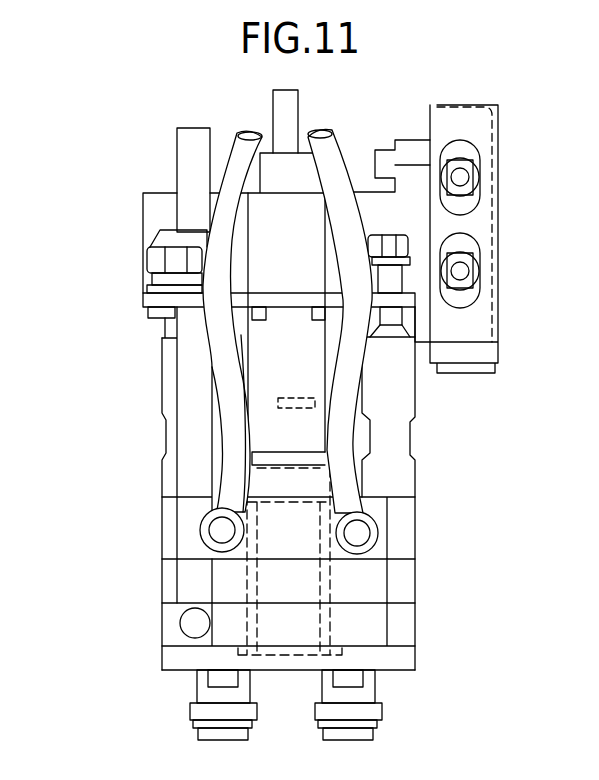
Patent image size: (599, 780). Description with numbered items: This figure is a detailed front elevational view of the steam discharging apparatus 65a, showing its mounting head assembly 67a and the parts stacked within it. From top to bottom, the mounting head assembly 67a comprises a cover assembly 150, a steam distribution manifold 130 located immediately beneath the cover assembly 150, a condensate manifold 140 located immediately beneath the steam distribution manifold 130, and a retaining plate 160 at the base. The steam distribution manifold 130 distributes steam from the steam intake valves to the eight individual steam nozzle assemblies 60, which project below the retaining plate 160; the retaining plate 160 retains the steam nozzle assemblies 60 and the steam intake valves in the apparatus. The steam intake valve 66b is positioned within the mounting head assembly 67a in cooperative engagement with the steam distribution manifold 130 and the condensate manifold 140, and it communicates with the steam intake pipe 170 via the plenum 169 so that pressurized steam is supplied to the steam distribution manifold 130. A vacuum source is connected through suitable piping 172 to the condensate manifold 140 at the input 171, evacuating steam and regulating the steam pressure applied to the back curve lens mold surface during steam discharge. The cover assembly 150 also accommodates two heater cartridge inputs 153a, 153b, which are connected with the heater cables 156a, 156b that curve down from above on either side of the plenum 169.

The steam discharging apparatus 65a is at (98, 233).
The piping 172 is at (194, 140).
The steam intake pipe 170 is at (300, 113).
The plenum 169 is at (287, 337).
The heater cable 156a is at (224, 361).
The heater cable 156b is at (358, 372).
The mounting head assembly 67a is at (410, 433).
The heater cartridge input 153a is at (221, 530).
The heater cartridge input 153b is at (358, 533).
The steam intake valve 66b is at (282, 482).
The cover assembly 150 is at (402, 545).
The steam distribution manifold 130 is at (402, 583).
The input 171 is at (195, 623).
The condensate manifold 140 is at (402, 623).
The retaining plate 160 is at (405, 655).
The steam nozzle assembly 60 is at (250, 685).